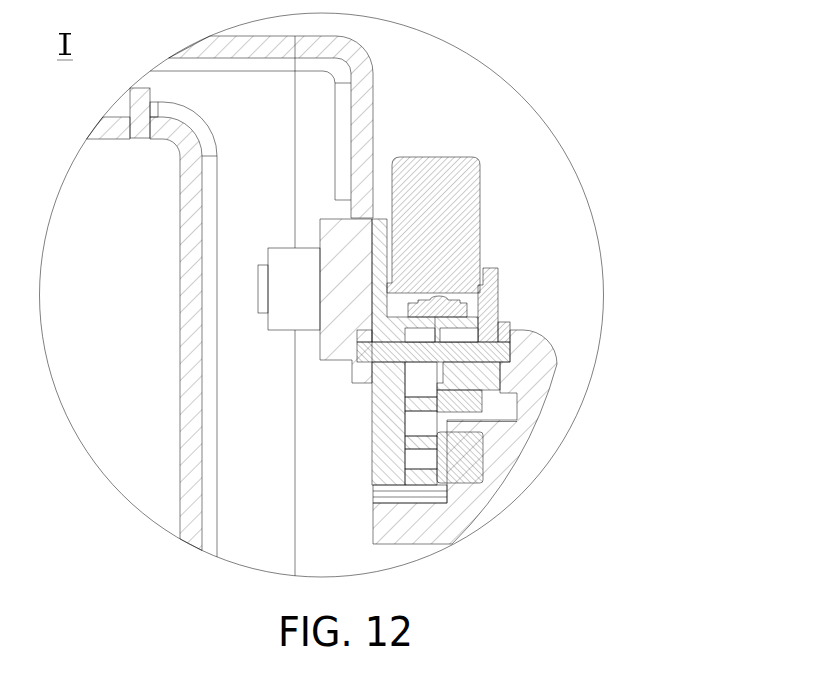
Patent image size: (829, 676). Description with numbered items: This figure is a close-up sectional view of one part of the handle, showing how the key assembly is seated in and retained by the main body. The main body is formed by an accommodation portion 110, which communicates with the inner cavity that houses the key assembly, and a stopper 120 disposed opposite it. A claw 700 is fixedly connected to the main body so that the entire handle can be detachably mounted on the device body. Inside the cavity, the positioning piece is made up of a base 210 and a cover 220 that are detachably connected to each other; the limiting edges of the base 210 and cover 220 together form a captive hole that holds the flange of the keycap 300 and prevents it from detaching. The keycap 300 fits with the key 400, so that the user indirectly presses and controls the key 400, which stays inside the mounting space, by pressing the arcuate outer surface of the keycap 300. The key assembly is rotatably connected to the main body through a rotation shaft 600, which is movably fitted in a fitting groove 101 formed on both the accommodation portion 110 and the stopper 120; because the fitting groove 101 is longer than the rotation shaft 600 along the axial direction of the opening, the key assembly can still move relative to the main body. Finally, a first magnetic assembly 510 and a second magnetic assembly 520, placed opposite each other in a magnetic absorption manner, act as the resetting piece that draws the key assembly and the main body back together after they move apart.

The fitting groove 101 is at (503, 340).
The accommodation portion 110 is at (535, 410).
The stopper 120 is at (337, 303).
The base 210 is at (372, 250).
The cover 220 is at (492, 328).
The keycap 300 is at (455, 200).
The key 400 is at (463, 303).
The first magnetic assembly 510 is at (458, 405).
The second magnetic assembly 520 is at (453, 453).
The rotation shaft 600 is at (509, 356).
The claw 700 is at (193, 258).